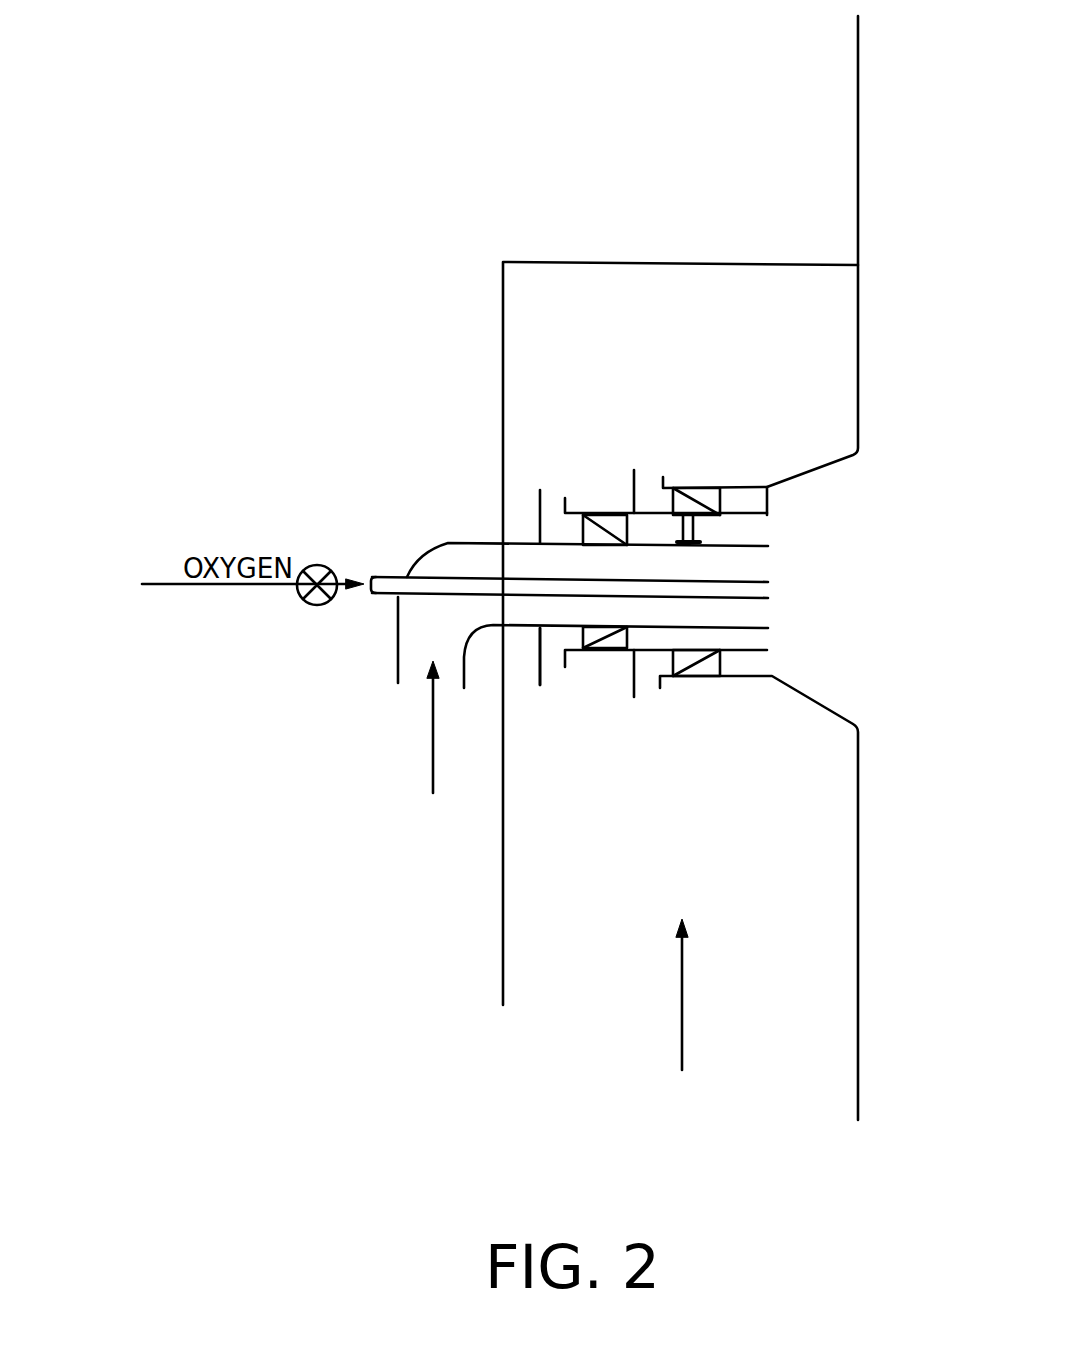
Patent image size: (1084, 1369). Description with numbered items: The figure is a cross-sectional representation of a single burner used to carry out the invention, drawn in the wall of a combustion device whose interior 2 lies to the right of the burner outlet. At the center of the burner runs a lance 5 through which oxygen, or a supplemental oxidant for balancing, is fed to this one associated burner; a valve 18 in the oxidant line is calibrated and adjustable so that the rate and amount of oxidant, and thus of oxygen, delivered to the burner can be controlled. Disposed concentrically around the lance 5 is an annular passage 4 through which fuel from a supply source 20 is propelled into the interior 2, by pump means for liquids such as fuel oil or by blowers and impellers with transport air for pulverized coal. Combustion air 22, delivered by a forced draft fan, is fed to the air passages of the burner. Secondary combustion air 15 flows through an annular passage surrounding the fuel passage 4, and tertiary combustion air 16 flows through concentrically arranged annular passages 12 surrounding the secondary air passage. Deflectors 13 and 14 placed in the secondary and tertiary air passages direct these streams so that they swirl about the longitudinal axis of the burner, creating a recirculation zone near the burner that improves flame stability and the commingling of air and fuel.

The interior of combustion device 2 is at (921, 540).
The annular passage 4 is at (500, 562).
The lance 5 is at (388, 575).
The annular passages 12 is at (747, 503).
The deflector 13 is at (603, 535).
The deflector 14 is at (693, 507).
The secondary combustion air 15 is at (553, 680).
The tertiary combustion air 16 is at (648, 700).
The valve 18 is at (310, 605).
The supply source 20 is at (423, 760).
The combustion air 22 is at (683, 1027).